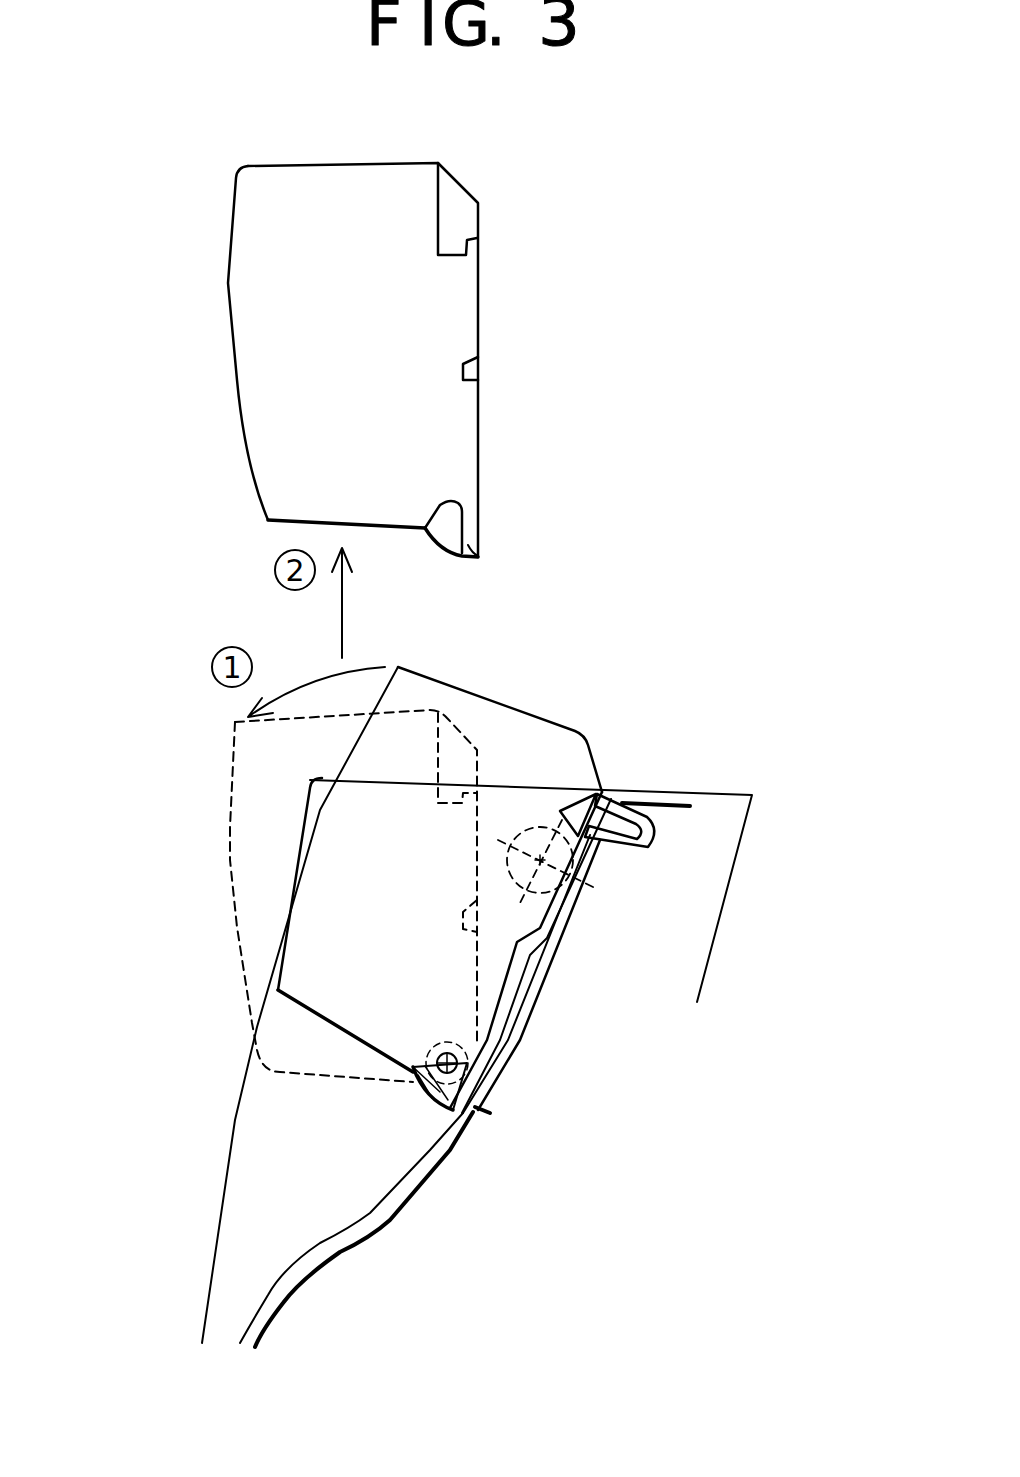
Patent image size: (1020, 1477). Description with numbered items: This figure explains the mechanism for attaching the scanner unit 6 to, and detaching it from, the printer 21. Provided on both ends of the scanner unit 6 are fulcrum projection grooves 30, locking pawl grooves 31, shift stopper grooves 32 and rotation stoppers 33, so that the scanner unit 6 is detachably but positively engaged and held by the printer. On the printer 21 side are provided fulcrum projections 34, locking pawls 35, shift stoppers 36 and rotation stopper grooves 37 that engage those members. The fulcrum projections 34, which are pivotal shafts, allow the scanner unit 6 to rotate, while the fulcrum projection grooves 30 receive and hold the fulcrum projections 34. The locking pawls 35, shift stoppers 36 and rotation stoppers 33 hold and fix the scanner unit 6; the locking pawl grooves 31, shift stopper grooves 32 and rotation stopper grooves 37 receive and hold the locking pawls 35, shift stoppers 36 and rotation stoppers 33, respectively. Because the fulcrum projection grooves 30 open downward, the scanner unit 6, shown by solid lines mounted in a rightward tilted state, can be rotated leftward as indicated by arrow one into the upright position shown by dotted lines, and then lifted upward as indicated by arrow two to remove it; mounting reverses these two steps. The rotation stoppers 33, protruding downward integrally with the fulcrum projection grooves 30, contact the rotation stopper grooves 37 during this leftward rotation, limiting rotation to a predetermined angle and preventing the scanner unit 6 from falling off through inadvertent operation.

The scanner unit 6 is at (228, 285).
The printer 21 is at (620, 1072).
The fulcrum projection groove 30 is at (447, 527).
The locking pawl groove 31 is at (463, 212).
The shift stopper groove 32 is at (477, 372).
The rotation stopper 33 is at (478, 557).
The fulcrum projection 34 is at (420, 1083).
The locking pawl 35 is at (567, 817).
The shift stopper 36 is at (540, 947).
The rotation stopper groove 37 is at (482, 1110).